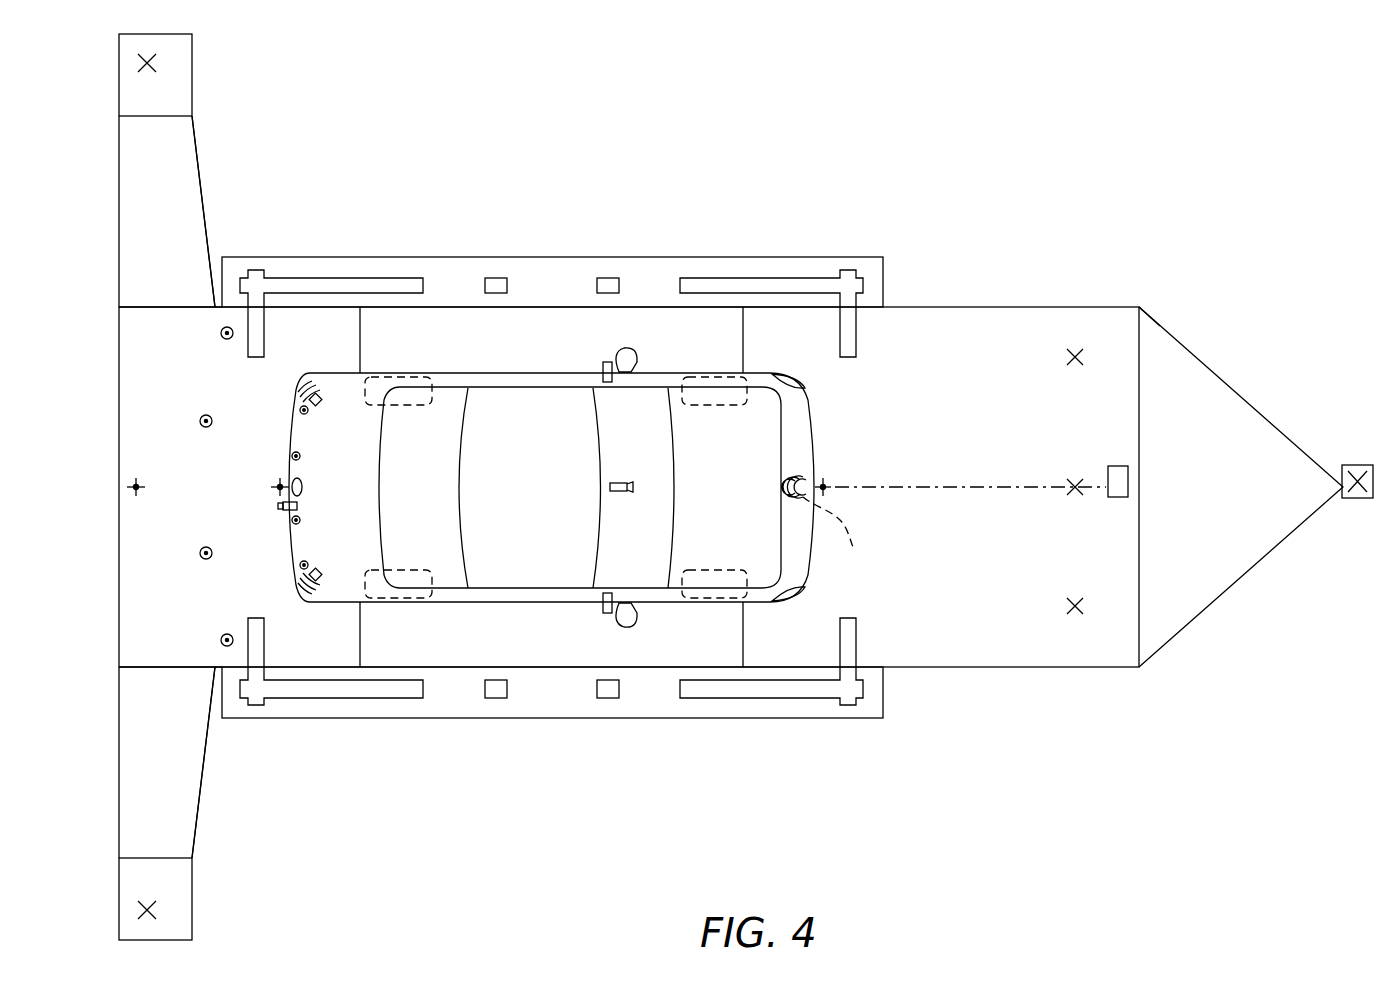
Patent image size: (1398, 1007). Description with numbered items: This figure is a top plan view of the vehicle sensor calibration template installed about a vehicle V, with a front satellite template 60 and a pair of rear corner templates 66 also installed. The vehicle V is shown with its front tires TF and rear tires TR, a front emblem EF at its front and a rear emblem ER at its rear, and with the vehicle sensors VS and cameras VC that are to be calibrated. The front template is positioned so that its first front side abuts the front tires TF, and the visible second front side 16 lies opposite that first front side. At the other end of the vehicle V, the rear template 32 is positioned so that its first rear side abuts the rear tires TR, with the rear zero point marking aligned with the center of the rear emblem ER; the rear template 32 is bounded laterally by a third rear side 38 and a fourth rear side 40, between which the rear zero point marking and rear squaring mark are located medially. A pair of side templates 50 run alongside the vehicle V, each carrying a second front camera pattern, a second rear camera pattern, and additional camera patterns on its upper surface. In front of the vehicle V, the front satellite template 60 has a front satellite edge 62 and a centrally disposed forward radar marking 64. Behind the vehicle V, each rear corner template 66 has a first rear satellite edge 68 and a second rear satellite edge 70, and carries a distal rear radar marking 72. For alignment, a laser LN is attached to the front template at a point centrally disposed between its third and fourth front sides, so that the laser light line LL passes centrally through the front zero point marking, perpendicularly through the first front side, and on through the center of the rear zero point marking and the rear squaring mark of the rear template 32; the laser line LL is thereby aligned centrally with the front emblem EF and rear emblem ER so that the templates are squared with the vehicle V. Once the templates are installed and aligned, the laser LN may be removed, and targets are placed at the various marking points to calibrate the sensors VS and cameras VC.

The second front side 16 is at (1143, 322).
The rear template 32 is at (157, 560).
The third rear side 38 is at (133, 667).
The fourth rear side 40 is at (190, 306).
The side templates 50 is at (567, 257).
The front satellite template 60 is at (1232, 417).
The front satellite edge 62 is at (1137, 362).
The forward radar marking 64 is at (1362, 498).
The rear corner templates 66 is at (201, 179).
The first rear satellite edge 68 is at (177, 308).
The second rear satellite edge 70 is at (119, 210).
The distal rear radar marking 72 is at (150, 64).
The vehicle V is at (546, 407).
The rear tires TR is at (392, 375).
The front tires TF is at (710, 378).
The rear emblem ER is at (290, 485).
The front emblem EF is at (818, 484).
The cameras VC is at (618, 483).
The sensors VS is at (835, 532).
The laser light line LL is at (928, 487).
The laser LN is at (1122, 488).